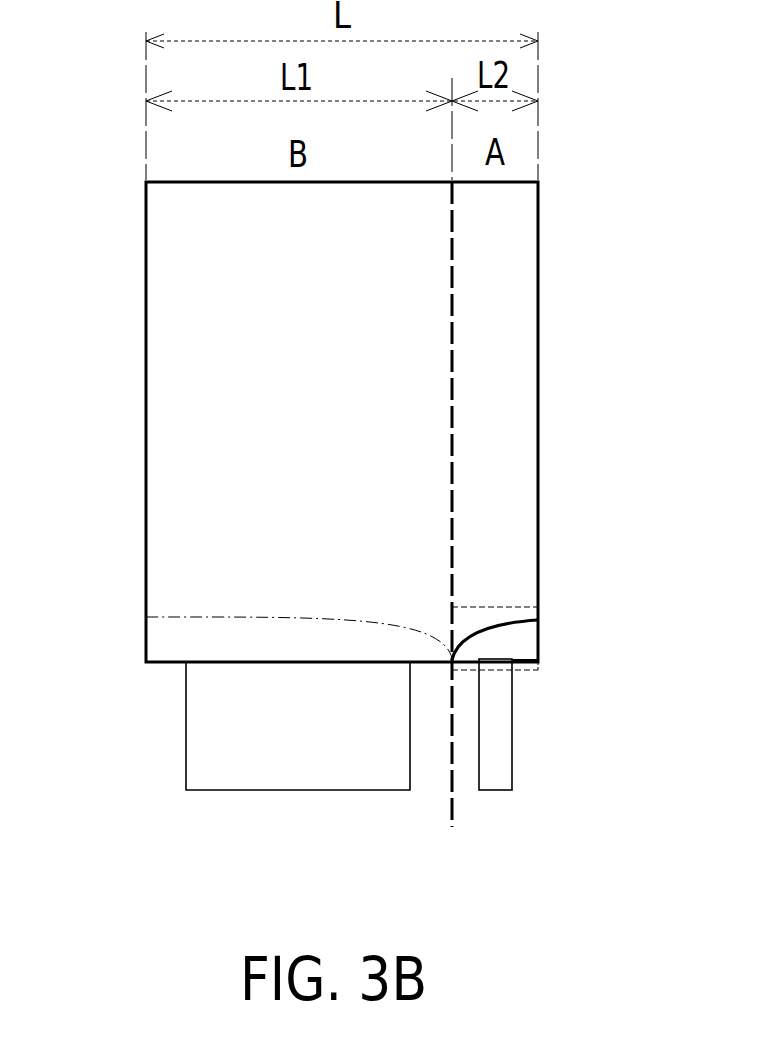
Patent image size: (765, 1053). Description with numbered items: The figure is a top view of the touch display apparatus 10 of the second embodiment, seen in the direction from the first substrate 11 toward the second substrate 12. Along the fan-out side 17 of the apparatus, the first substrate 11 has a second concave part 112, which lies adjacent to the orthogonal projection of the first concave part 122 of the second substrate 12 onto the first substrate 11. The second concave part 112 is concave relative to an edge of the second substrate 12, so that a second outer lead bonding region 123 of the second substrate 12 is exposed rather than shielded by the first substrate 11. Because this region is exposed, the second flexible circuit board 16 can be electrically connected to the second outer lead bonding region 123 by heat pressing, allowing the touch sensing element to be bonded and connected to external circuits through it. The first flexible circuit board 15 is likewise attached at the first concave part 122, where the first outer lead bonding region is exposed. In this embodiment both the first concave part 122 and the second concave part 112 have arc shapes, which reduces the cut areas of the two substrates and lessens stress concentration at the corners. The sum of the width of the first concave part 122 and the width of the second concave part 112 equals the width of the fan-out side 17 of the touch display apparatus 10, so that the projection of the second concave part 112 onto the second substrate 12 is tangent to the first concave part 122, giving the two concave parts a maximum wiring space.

The touch display apparatus 10 is at (622, 891).
The first substrate 11 is at (503, 268).
The second substrate 12 is at (524, 642).
The first concave part 122 is at (245, 617).
The second outer lead bonding region 123 is at (505, 648).
The fan-out side 17 is at (553, 677).
The second concave part 112 is at (514, 662).
The first flexible circuit board 15 is at (305, 765).
The second flexible circuit board 16 is at (497, 765).